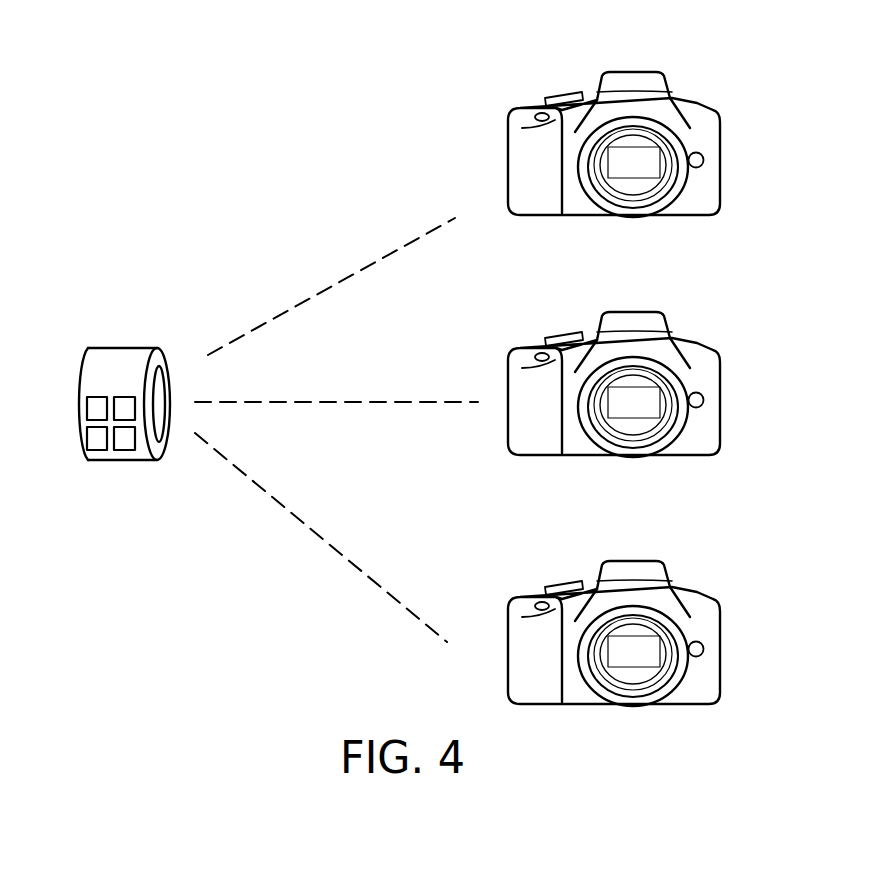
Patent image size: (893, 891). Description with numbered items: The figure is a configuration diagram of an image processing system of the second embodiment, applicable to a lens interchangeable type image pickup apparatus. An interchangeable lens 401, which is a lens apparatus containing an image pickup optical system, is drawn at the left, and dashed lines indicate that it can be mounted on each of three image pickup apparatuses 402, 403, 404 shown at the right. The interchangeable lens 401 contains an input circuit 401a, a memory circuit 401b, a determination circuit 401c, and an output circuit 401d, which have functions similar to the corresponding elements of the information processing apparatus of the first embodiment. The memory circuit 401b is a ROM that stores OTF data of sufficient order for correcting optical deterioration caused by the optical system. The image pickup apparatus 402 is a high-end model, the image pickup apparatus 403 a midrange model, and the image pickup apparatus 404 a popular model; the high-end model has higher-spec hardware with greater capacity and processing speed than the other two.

The interchangeable lens 401 is at (112, 347).
The input circuit 401a is at (97, 397).
The memory circuit 401b is at (125, 397).
The determination circuit 401c is at (97, 450).
The output circuit 401d is at (127, 450).
The image pickup apparatus 402 is at (688, 98).
The image pickup apparatus 403 is at (688, 338).
The image pickup apparatus 404 is at (688, 587).